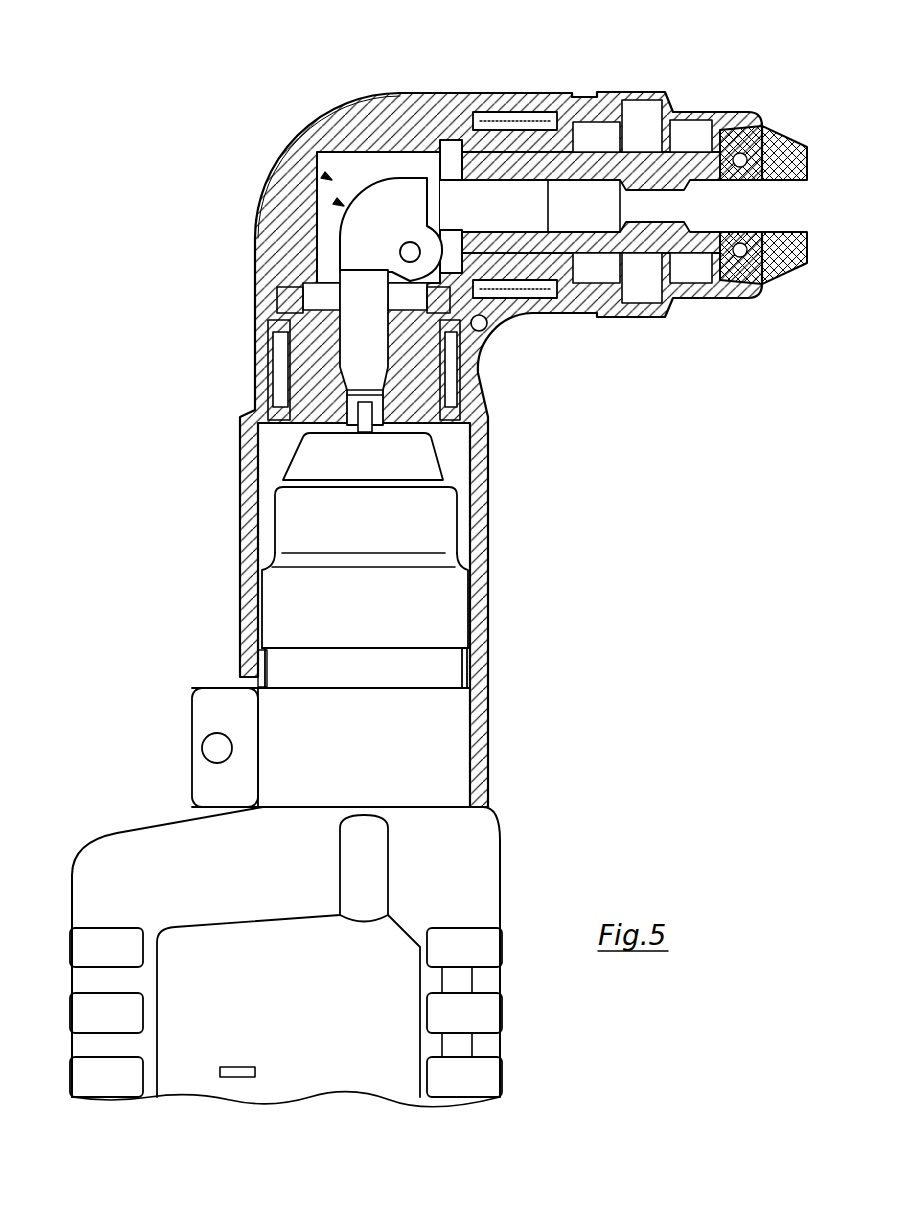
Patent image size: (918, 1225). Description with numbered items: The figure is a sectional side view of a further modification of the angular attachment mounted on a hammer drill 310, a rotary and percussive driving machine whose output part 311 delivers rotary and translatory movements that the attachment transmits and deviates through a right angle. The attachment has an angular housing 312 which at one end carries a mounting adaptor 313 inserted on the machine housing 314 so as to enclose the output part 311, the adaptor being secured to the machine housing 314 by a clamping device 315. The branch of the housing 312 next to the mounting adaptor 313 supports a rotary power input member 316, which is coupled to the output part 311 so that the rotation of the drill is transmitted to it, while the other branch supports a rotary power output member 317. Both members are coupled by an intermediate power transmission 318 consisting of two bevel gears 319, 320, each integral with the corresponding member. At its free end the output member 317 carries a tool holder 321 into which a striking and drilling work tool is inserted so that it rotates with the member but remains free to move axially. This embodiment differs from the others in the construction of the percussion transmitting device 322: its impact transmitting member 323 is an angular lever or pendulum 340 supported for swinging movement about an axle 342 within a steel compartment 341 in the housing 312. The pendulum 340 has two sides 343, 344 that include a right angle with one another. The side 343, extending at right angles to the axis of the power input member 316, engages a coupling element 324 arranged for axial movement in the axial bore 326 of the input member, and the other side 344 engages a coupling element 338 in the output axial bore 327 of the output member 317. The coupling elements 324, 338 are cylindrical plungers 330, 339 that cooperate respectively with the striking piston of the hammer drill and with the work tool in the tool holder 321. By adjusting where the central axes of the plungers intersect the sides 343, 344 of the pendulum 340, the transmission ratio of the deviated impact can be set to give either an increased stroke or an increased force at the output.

The hammer drill 310 is at (293, 1012).
The output part 311 is at (320, 508).
The housing 312 is at (363, 123).
The mounting adaptor 313 is at (458, 455).
The machine housing 314 is at (467, 862).
The clamping device 315 is at (208, 712).
The power input member 316 is at (287, 423).
The power output member 317 is at (543, 112).
The intermediate power transmission 318 is at (462, 306).
The bevel gear 319 is at (287, 290).
The bevel gear 320 is at (445, 125).
The tool holder 321 is at (795, 212).
The transmitting device 322 is at (297, 143).
The impact transmitting member 323 is at (328, 177).
The coupling element 324 is at (328, 341).
The axial bore 326 is at (480, 333).
The output axial bore 327 is at (660, 107).
The cylindrical plunger 330 is at (357, 353).
The coupling element 338 is at (493, 190).
The cylindrical plunger 339 is at (607, 100).
The pendulum 340 is at (353, 237).
The steel compartment 341 is at (367, 160).
The axle 342 is at (572, 315).
The side 343 is at (445, 248).
The side 344 is at (417, 205).